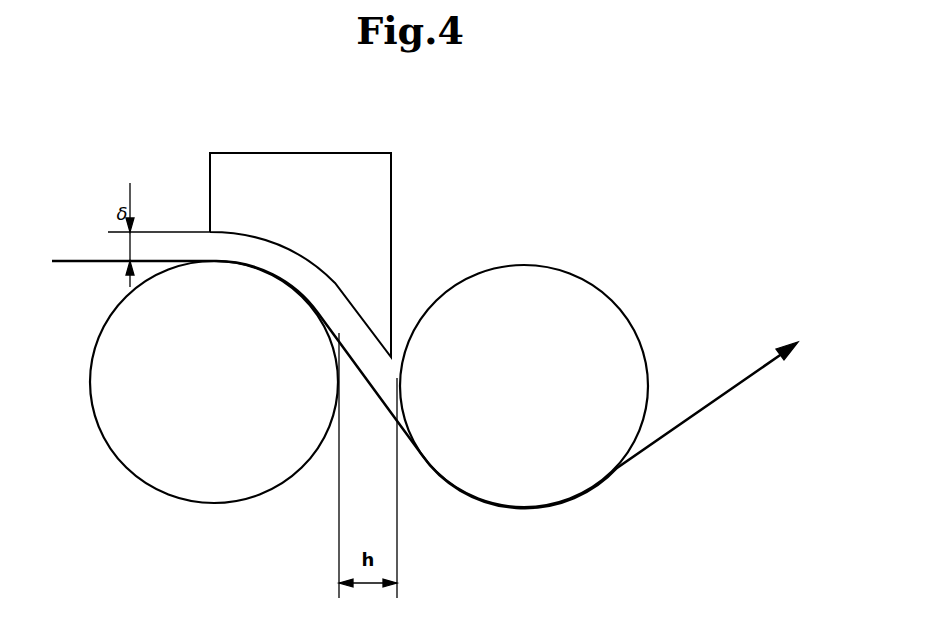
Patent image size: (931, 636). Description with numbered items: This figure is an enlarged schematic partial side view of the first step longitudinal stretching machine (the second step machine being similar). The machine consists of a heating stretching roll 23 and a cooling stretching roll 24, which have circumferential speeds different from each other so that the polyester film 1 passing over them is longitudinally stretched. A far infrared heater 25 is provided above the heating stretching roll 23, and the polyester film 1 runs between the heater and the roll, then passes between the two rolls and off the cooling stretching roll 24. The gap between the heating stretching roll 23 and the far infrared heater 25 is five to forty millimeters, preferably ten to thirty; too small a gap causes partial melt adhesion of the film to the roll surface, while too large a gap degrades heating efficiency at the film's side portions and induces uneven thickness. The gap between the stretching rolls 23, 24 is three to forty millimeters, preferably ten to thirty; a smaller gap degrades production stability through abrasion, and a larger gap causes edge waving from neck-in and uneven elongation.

The polyester film 1 is at (710, 406).
The heating stretching roll 23 is at (117, 462).
The cooling stretching roll 24 is at (588, 280).
The far infrared heater 25 is at (391, 178).